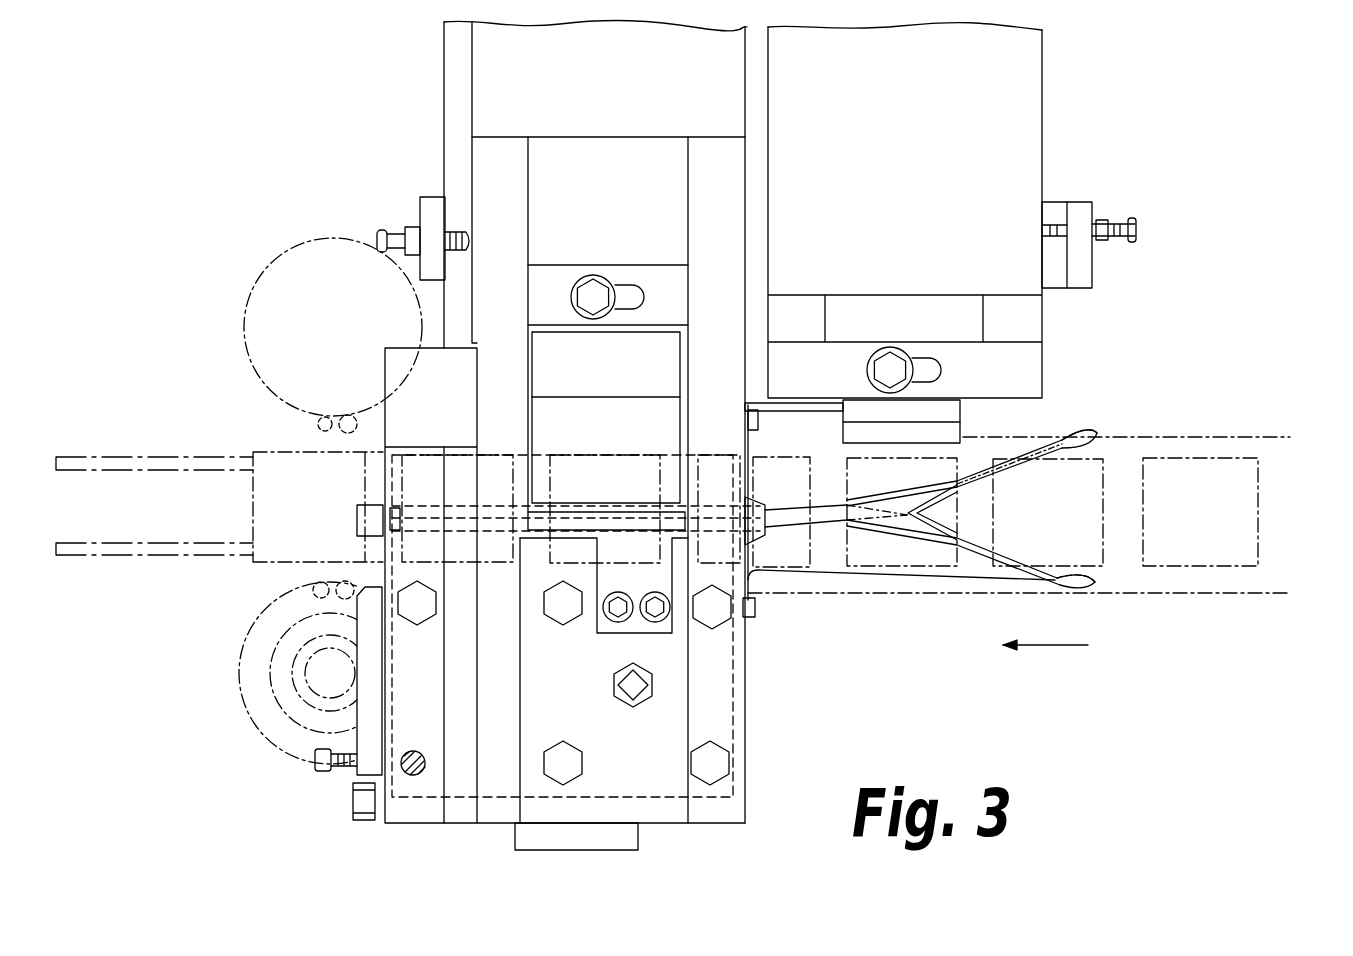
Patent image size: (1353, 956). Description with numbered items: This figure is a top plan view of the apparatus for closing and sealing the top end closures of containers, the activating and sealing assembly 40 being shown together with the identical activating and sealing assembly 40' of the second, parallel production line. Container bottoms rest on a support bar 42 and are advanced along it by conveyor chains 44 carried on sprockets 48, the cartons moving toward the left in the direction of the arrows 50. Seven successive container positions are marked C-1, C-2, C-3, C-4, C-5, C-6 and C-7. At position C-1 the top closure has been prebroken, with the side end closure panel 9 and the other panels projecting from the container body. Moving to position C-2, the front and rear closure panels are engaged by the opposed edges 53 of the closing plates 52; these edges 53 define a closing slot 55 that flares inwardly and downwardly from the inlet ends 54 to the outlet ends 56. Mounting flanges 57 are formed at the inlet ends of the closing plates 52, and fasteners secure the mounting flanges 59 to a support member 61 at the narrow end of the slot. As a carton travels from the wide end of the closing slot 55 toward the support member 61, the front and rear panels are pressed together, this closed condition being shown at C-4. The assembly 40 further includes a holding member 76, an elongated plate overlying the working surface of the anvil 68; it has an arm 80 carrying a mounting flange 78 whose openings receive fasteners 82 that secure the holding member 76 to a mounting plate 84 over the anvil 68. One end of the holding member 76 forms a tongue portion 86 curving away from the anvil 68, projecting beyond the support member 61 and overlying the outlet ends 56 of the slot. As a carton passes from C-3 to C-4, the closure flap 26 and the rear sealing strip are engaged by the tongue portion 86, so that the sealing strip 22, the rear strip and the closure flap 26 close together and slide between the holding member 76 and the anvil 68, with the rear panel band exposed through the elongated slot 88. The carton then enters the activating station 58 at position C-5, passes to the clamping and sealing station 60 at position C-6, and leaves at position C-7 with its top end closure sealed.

The activating and sealing assembly 40 is at (399, 227).
The activating and sealing assembly of the second production line 40' is at (1103, 203).
The sprockets 48 is at (272, 278).
The support bar 42 is at (122, 460).
The container position C-7 is at (282, 448).
The container position C-6 is at (447, 448).
The container position C-5 is at (599, 455).
The container position C-4 is at (736, 453).
The container position C-3 is at (904, 572).
The container position C-2 is at (1122, 455).
The container position C-1 is at (1266, 538).
The clamping and sealing station 60 is at (455, 502).
The activating station 58 is at (627, 505).
The support member 61 is at (735, 383).
The mounting flanges 59 is at (760, 425).
The mounting flanges 57 is at (752, 445).
The closing slot 55 is at (831, 498).
The closing plates 52 is at (975, 464).
The outlet ends 56 is at (778, 515).
The closure flap 26 is at (906, 494).
The sealing strip 22 is at (906, 534).
The edges 53 is at (990, 460).
The inlet ends 54 is at (1062, 452).
The side end closure panel 9 is at (935, 512).
The holding member 76 is at (357, 520).
The tongue portion 86 is at (770, 528).
The elongated slot 88 is at (520, 540).
The arm 80 is at (610, 572).
The fasteners 82 is at (612, 606).
The mounting flange 78 is at (627, 630).
The arrows 50 is at (1088, 645).
The anvil 68 is at (735, 710).
The mounting plate 84 is at (650, 825).
The conveyor chains 44 is at (313, 590).